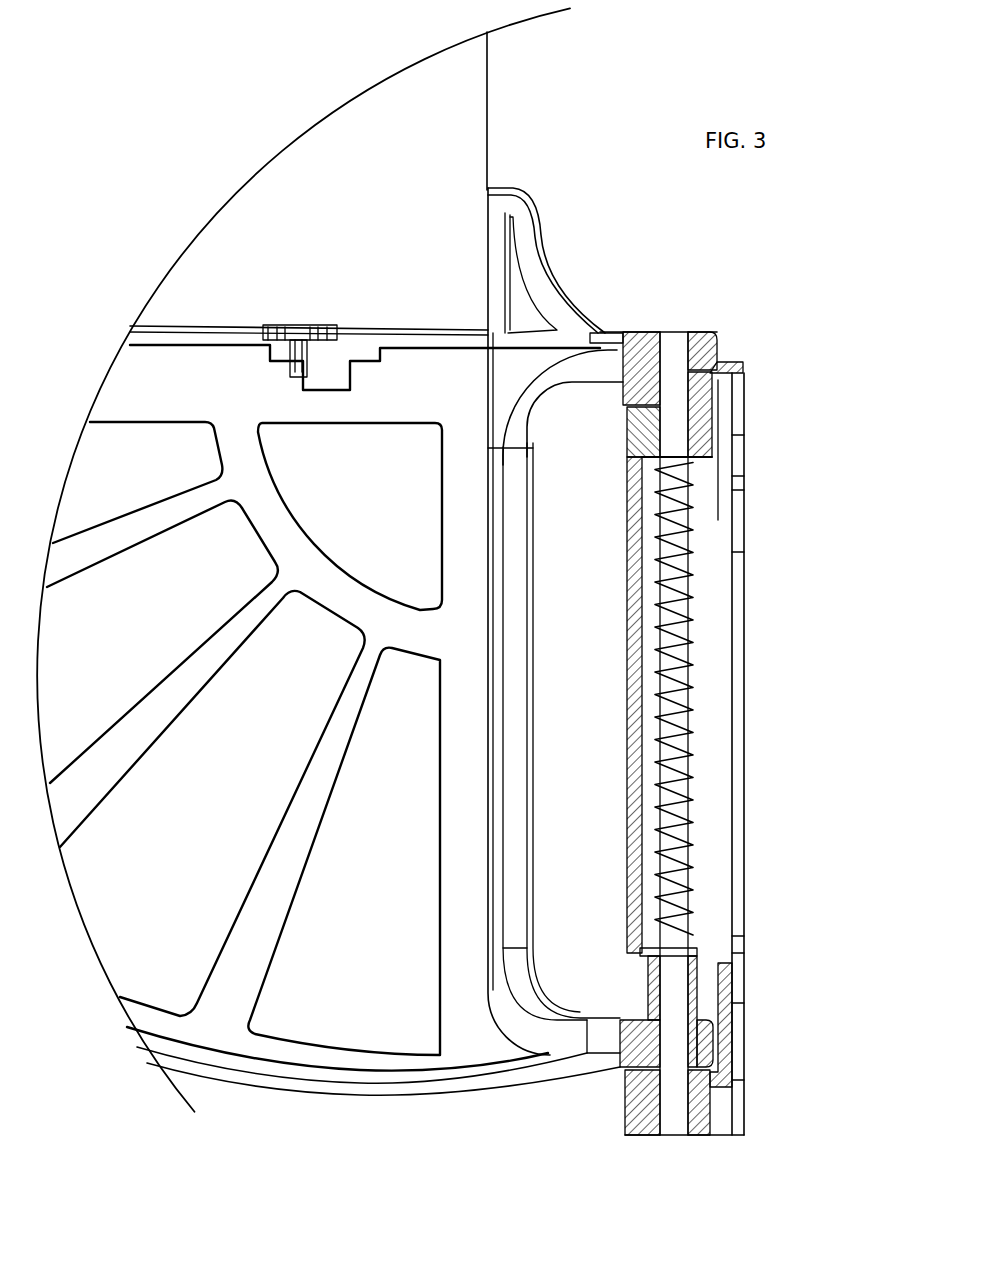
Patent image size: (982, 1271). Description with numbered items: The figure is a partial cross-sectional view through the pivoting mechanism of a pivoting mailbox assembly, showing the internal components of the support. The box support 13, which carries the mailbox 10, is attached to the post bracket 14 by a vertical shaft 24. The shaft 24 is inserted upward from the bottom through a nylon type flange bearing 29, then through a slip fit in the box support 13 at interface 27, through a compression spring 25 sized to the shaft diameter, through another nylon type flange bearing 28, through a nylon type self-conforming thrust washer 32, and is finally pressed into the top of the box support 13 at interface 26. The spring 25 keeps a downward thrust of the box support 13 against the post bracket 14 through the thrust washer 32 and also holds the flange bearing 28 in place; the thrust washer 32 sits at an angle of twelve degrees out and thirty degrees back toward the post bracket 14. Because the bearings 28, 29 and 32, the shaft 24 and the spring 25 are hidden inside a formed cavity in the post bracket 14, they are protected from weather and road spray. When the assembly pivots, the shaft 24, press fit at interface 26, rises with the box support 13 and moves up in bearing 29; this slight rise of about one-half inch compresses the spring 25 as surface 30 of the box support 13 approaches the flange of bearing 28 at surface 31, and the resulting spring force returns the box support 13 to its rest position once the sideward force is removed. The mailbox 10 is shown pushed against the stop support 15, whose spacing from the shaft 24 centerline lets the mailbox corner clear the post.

The mailbox 10 is at (487, 118).
The box support 13 is at (535, 673).
The post bracket 14 is at (742, 828).
The stop support 15 is at (487, 257).
The shaft 24 is at (692, 580).
The spring 25 is at (692, 668).
The interface 26 is at (688, 352).
The interface 27 is at (687, 1037).
The flange bearing 28 is at (710, 427).
The flange bearing 29 is at (687, 1093).
The surface 30 is at (695, 950).
The surface 31 is at (704, 455).
The thrust washer 32 is at (727, 362).